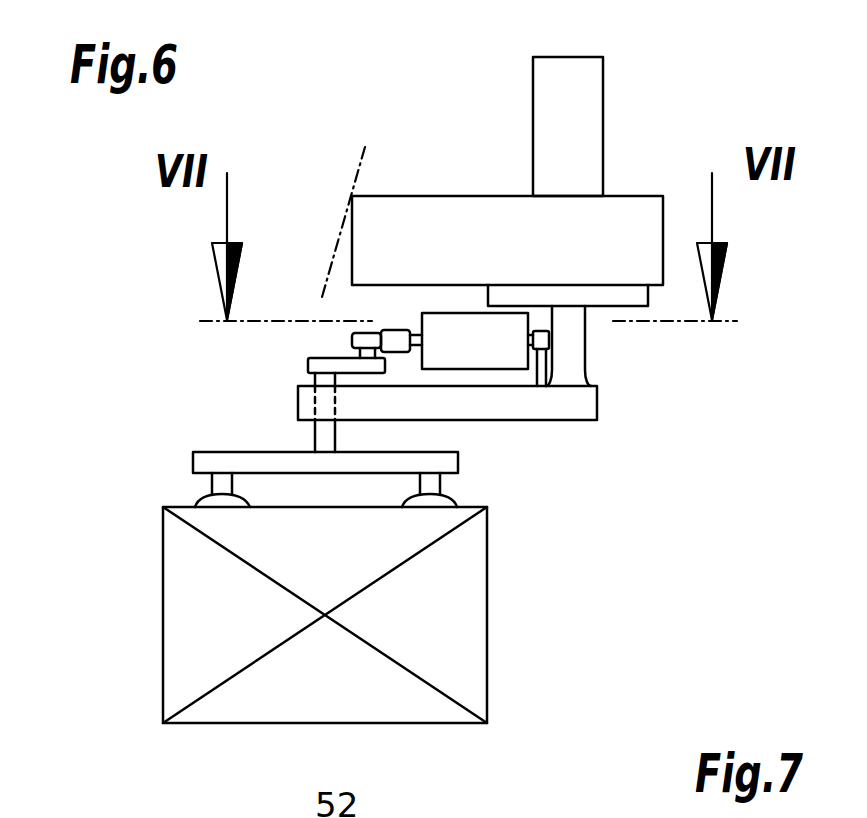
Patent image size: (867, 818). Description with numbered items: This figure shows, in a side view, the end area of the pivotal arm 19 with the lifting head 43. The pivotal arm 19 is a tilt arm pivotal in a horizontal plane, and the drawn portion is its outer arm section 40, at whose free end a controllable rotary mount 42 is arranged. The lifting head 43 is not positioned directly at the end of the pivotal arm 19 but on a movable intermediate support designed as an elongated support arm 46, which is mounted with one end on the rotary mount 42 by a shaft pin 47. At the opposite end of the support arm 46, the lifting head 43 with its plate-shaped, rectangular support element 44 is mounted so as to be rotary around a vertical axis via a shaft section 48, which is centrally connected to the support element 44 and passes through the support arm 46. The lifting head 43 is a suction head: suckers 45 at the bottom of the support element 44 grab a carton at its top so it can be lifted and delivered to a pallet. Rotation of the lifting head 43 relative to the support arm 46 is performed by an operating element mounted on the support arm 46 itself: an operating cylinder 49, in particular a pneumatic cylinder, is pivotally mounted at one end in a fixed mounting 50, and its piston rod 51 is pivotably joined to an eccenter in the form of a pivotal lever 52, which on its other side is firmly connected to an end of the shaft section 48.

The pivotal arm 19 is at (678, 57).
The outer arm section 40 is at (423, 213).
The rotary mount 42 is at (624, 165).
The lifting head 43 is at (152, 462).
The support element 44 is at (225, 465).
The suckers 45 is at (243, 505).
The support arm 46 is at (472, 403).
The shaft pin 47 is at (575, 363).
The shaft section 48 is at (327, 433).
The operating cylinder 49 is at (488, 353).
The fixed mounting 50 is at (545, 340).
The piston rod 51 is at (392, 345).
The pivotal lever 52 is at (343, 363).